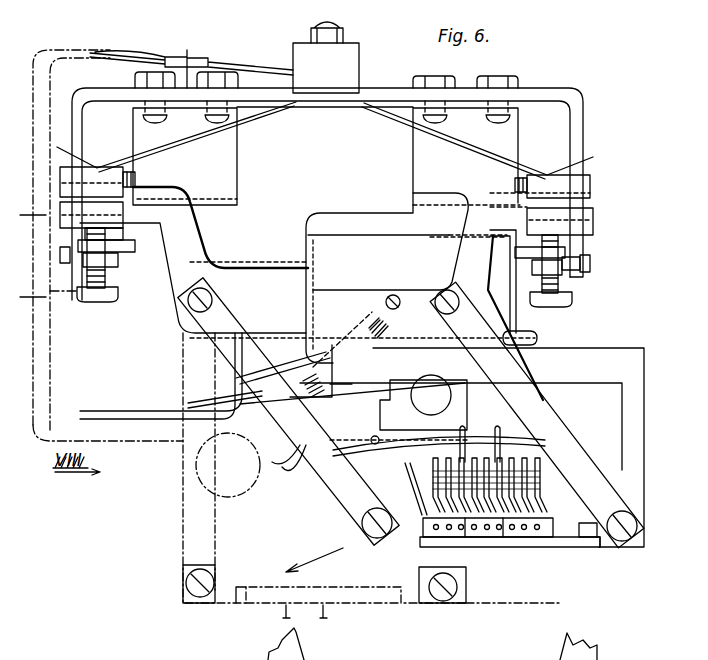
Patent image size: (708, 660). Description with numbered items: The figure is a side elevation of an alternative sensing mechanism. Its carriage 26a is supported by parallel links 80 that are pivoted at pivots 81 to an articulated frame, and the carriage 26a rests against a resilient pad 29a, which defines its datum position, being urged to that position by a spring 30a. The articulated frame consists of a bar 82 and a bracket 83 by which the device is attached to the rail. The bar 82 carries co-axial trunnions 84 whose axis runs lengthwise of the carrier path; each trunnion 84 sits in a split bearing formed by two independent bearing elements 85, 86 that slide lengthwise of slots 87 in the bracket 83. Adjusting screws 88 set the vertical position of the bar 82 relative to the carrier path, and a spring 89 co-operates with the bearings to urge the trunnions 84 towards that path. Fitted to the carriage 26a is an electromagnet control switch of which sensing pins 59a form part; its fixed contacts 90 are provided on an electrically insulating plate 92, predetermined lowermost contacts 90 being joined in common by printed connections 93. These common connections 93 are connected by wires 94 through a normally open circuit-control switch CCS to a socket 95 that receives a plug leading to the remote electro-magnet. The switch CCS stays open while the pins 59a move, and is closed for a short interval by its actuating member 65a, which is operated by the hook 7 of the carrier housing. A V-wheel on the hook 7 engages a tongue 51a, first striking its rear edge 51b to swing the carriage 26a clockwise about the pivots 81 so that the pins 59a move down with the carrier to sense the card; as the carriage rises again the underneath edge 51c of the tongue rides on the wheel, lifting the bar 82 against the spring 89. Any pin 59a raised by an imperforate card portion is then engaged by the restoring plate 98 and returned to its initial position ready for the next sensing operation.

The hook 7 is at (170, 448).
The carriage 26a is at (628, 465).
The resilient pad 29a is at (539, 338).
The spring 30a is at (381, 303).
The tongue 51a is at (322, 378).
The rear edge 51b is at (535, 380).
The underneath edge 51c is at (363, 435).
The sensing pins 59a is at (507, 413).
The actuating member 65a is at (230, 400).
The parallel links 80 is at (341, 495).
The pivots 81 is at (206, 290).
The bar 82 is at (269, 273).
The bracket 83 is at (512, 137).
The trunnions 84 is at (107, 202).
The bearing element 85 is at (115, 222).
The bearing element 86 is at (95, 177).
The slots 87 is at (76, 140).
The adjusting screws 88 is at (98, 302).
The spring 89 is at (370, 108).
The fixed electric contacts 90 is at (584, 555).
The electrically insulating plate 92 is at (590, 540).
The printed connections 93 is at (443, 530).
The wires 94 is at (286, 460).
The socket 95 is at (293, 50).
The restoring plate 98 is at (122, 392).
The circuit-control switch CCS is at (437, 228).